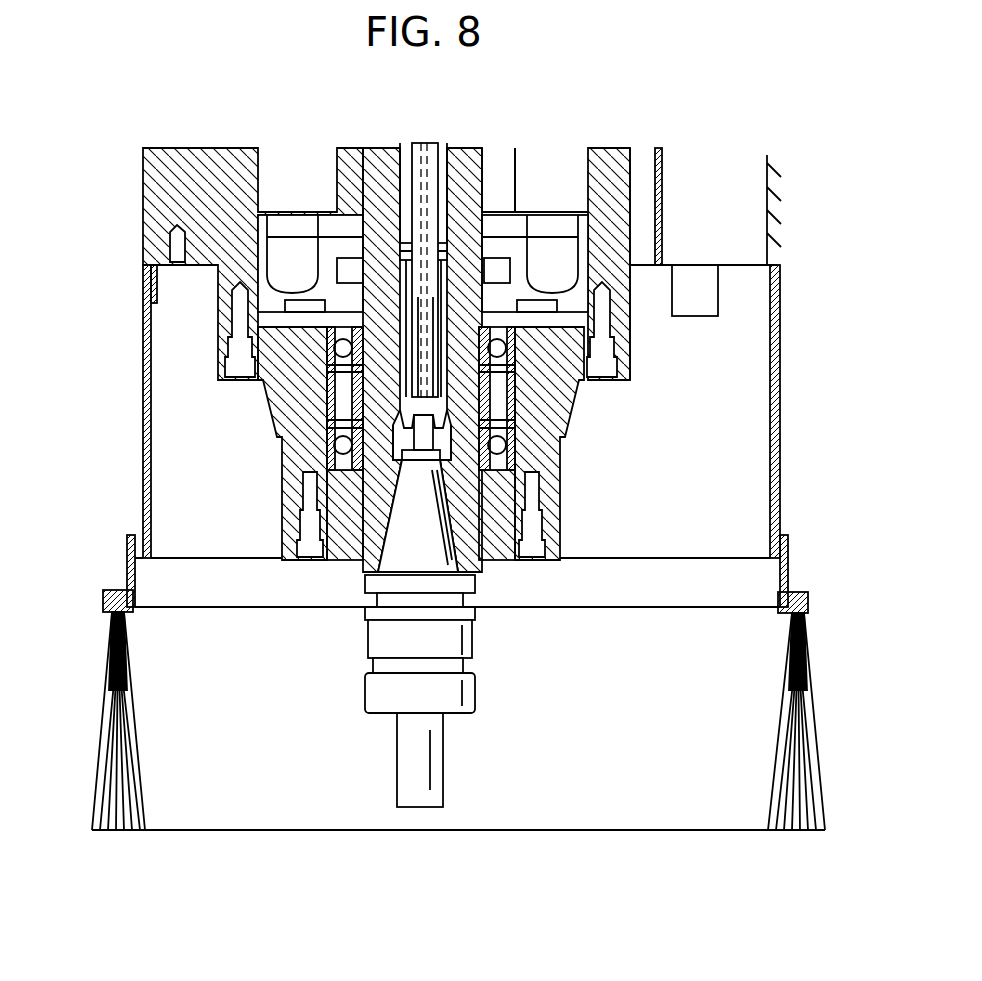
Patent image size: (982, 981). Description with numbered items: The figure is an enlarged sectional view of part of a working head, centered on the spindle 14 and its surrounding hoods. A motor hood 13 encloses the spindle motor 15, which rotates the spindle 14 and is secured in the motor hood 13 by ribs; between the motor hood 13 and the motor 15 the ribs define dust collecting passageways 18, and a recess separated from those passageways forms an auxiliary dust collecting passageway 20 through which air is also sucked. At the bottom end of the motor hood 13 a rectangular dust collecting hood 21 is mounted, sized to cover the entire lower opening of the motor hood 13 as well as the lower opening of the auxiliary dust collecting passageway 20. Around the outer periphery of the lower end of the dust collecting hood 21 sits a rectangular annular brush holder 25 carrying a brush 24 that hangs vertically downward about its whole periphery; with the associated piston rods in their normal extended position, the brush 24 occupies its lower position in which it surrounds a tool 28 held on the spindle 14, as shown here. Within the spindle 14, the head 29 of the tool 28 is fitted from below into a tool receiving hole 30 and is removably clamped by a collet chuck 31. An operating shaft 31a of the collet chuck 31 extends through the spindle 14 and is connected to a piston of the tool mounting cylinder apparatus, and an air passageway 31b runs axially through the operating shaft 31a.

The motor hood 13 is at (143, 195).
The spindle 14 is at (483, 520).
The spindle motor 15 is at (664, 203).
The dust collecting passageways 18 is at (582, 188).
The auxiliary dust collecting passageway 20 is at (722, 177).
The dust collecting hood 21 is at (143, 440).
The brush 24 is at (793, 808).
The brush holder 25 is at (790, 545).
The tool 28 is at (410, 694).
The head 29 is at (418, 553).
The tool receiving hole 30 is at (405, 508).
The collet chuck 31 is at (504, 298).
The operating shaft 31a is at (452, 165).
The air passageway 31b is at (398, 162).